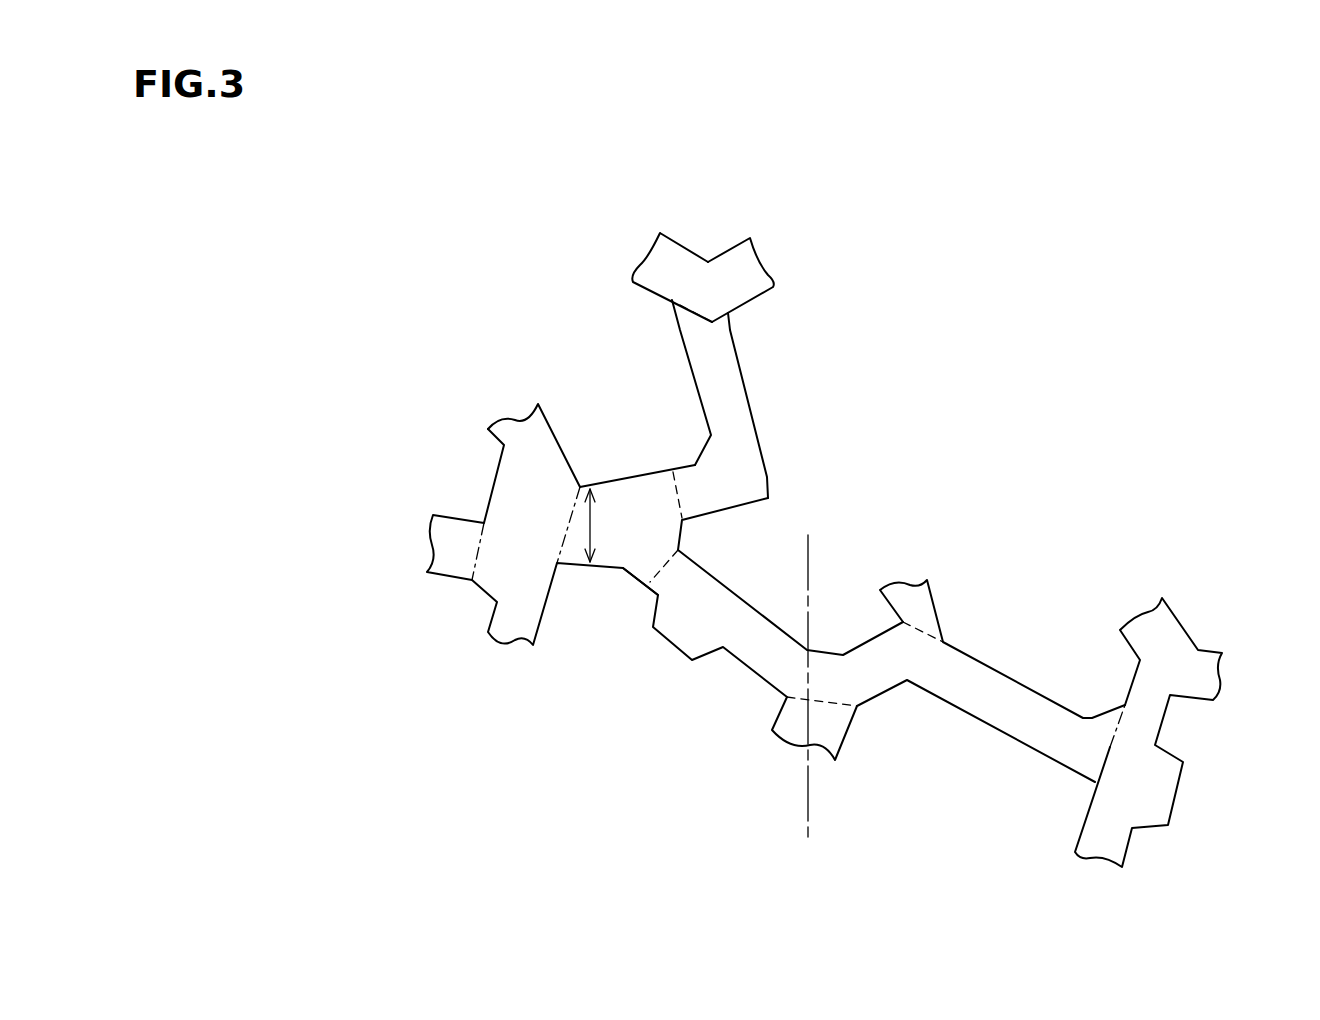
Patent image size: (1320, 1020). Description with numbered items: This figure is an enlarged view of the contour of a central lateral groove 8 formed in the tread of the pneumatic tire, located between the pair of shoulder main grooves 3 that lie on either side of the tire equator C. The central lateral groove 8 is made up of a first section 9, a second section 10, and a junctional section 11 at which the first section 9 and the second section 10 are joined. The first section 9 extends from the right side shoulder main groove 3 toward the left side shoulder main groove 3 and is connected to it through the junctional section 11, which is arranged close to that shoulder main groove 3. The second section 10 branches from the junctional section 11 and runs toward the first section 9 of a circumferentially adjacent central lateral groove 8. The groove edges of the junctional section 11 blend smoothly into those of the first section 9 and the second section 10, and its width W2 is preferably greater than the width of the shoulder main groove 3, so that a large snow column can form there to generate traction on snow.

The shoulder main groove 3 is at (527, 443).
The central lateral groove 8 is at (668, 263).
The first section 9 is at (733, 278).
The second section 10 is at (723, 388).
The junctional section 11 is at (623, 537).
The width of the junctional section W2 is at (590, 527).
The tire equator C is at (808, 702).